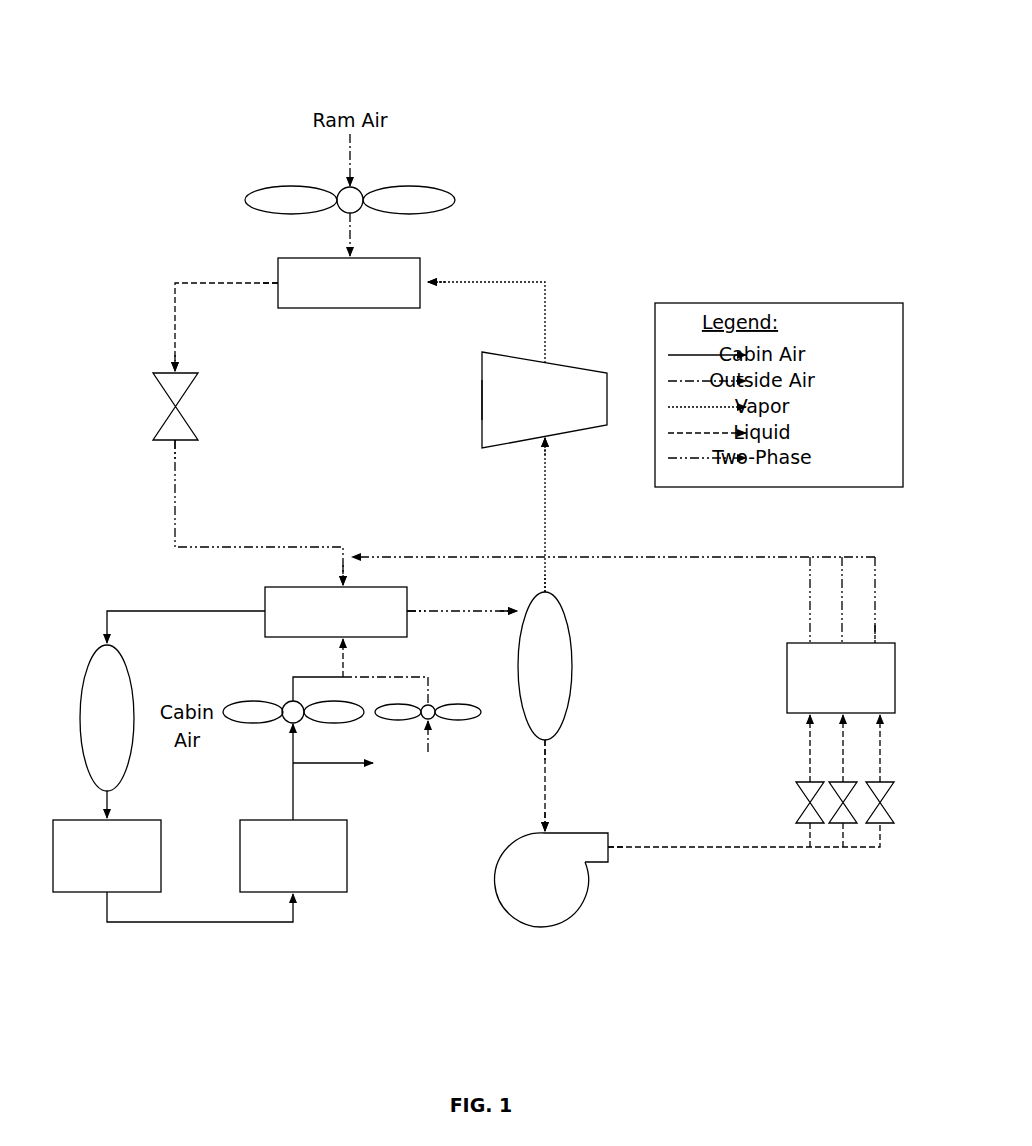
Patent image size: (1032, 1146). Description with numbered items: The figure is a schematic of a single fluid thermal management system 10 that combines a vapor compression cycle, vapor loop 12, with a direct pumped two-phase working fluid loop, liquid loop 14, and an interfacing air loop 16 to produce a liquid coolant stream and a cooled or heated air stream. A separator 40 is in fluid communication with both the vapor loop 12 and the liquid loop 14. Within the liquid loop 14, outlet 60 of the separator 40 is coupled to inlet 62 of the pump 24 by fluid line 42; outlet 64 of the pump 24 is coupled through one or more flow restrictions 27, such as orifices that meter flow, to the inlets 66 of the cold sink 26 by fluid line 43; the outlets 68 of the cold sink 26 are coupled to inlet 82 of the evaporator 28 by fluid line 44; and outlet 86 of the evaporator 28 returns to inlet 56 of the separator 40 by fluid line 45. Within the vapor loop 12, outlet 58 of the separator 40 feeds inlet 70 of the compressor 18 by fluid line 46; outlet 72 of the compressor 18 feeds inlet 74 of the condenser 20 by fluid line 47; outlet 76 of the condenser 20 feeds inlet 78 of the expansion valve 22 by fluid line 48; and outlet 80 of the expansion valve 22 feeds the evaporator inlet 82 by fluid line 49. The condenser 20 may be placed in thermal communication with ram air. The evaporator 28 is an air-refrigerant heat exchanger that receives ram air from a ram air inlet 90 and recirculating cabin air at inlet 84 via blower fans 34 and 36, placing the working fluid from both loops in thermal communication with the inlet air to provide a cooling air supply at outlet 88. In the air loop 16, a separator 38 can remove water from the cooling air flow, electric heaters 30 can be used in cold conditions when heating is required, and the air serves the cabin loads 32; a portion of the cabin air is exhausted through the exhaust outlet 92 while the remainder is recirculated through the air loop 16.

The thermal management system 10 is at (668, 88).
The vapor loop 12 is at (118, 283).
The liquid loop 14 is at (795, 930).
The air loop 16 is at (132, 972).
The compressor 18 is at (550, 362).
The condenser 20 is at (422, 268).
The expansion valve 22 is at (165, 395).
The pump 24 is at (498, 888).
The cold sink 26 is at (895, 695).
The flow restrictions 27 is at (892, 788).
The evaporator 28 is at (298, 587).
The electric heaters 30 is at (53, 848).
The cabin loads 32 is at (347, 858).
The fan 34 is at (478, 708).
The fan 36 is at (265, 700).
The separator 38 is at (80, 683).
The separator 40 is at (572, 680).
The fluid line 42 is at (542, 778).
The fluid line 43 is at (722, 848).
The fluid line 44 is at (743, 557).
The fluid line 45 is at (468, 610).
The fluid line 46 is at (543, 517).
The fluid line 47 is at (487, 282).
The fluid line 48 is at (237, 282).
The fluid line 49 is at (172, 512).
The separator inlet 56 is at (518, 612).
The separator outlet 58 is at (542, 592).
The separator outlet 60 is at (545, 740).
The pump inlet 62 is at (540, 832).
The pump outlet 64 is at (613, 850).
The cold sink inlets 66 is at (883, 718).
The cold sink outlets 68 is at (877, 640).
The compressor inlet 70 is at (548, 437).
The compressor outlet 72 is at (480, 397).
The condenser inlet 74 is at (422, 282).
The condenser outlet 76 is at (278, 295).
The expansion valve inlet 78 is at (178, 362).
The expansion valve outlet 80 is at (182, 442).
The evaporator inlet 82 is at (352, 587).
The evaporator inlet 84 is at (347, 637).
The evaporator outlet 86 is at (407, 602).
The evaporator outlet 88 is at (265, 605).
The ram air inlet 90 is at (424, 778).
The exhaust outlet 92 is at (315, 763).